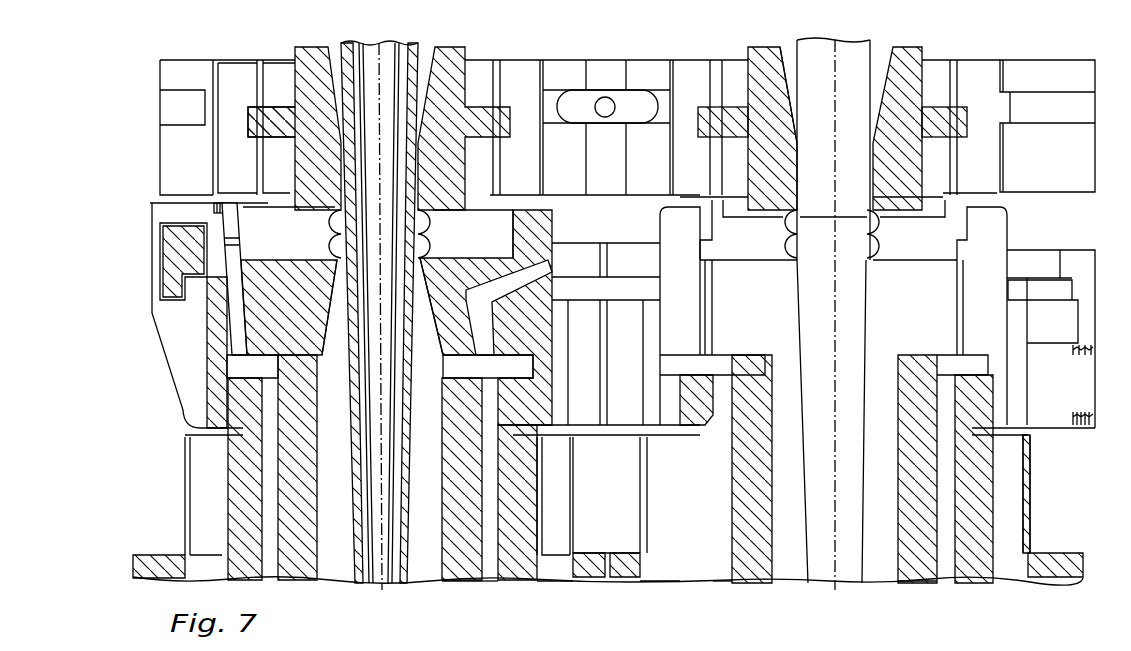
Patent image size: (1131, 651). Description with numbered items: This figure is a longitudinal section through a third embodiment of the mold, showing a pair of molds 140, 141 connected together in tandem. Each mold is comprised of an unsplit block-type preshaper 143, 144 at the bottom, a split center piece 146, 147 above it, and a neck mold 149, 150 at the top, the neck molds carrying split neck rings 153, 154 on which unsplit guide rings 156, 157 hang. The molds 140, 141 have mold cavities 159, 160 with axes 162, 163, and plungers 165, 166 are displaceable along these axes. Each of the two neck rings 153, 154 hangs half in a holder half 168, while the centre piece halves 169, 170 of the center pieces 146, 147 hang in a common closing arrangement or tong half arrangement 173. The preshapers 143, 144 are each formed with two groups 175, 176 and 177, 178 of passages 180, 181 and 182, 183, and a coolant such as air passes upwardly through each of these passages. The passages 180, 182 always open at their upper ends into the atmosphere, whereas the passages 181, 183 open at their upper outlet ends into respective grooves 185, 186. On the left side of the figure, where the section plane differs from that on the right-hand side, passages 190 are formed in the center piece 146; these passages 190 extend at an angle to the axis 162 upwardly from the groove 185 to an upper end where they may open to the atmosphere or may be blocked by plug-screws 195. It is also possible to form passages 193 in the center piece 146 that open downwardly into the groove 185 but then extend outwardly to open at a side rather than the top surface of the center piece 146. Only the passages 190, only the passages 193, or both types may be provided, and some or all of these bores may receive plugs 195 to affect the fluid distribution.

The mold 140 is at (458, 30).
The mold 141 is at (910, 32).
The unsplit block-type preshaper 143 is at (455, 586).
The unsplit block-type preshaper 144 is at (908, 584).
The split center piece 146 is at (205, 344).
The split center piece 147 is at (728, 313).
The neck mold 149 is at (294, 44).
The neck mold 150 is at (766, 42).
The split neck ring 153 is at (272, 73).
The split neck ring 154 is at (728, 73).
The unsplit guide ring 156 is at (317, 52).
The unsplit guide ring 157 is at (790, 45).
The mold cavity 159 is at (347, 473).
The mold cavity 160 is at (779, 478).
The axis 162 is at (383, 528).
The axis 163 is at (833, 518).
The plunger 165 is at (346, 42).
The plunger 166 is at (818, 40).
The holder half 168 is at (173, 58).
The center piece half 169 is at (552, 219).
The center piece half 170 is at (660, 219).
The common closing arrangement or tong half arrangement 173 is at (183, 414).
The group of passages 175 is at (545, 586).
The group of passages 176 is at (487, 586).
The group of passages 177 is at (655, 586).
The group of passages 178 is at (722, 586).
The passage 180 is at (197, 443).
The passage 181 is at (273, 556).
The passage 182 is at (653, 468).
The passage 183 is at (728, 565).
The groove 185 is at (238, 365).
The groove 186 is at (693, 365).
The passage 190 is at (228, 303).
The passage 193 is at (538, 262).
The plug-screw 195 is at (200, 220).